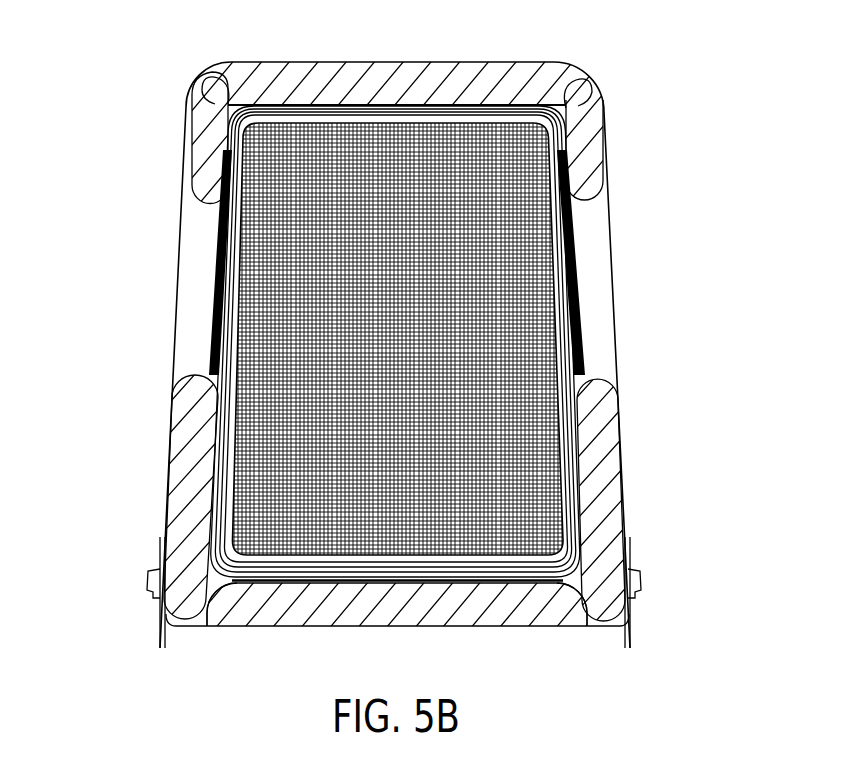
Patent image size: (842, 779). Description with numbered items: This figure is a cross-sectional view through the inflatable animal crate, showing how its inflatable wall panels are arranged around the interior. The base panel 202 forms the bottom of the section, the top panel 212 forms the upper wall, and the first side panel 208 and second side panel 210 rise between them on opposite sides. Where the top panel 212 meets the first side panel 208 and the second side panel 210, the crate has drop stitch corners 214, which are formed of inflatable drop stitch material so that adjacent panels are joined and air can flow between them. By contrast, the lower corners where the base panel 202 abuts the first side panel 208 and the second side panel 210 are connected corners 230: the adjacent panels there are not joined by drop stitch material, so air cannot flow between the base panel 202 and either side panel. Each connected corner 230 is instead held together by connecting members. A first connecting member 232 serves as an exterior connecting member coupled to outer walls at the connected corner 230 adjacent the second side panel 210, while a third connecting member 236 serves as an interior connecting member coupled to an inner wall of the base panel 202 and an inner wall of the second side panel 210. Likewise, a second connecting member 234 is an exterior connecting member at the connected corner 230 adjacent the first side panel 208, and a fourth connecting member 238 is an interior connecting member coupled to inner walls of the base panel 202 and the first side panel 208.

The base panel 202 is at (508, 608).
The first side panel 208 is at (606, 511).
The second side panel 210 is at (178, 485).
The top panel 212 is at (502, 88).
The drop stitch corner 214 is at (160, 111).
The connected corner 230 is at (128, 609).
The first connecting member 232 is at (212, 628).
The second connecting member 234 is at (586, 628).
The third connecting member 236 is at (212, 552).
The fourth connecting member 238 is at (585, 541).